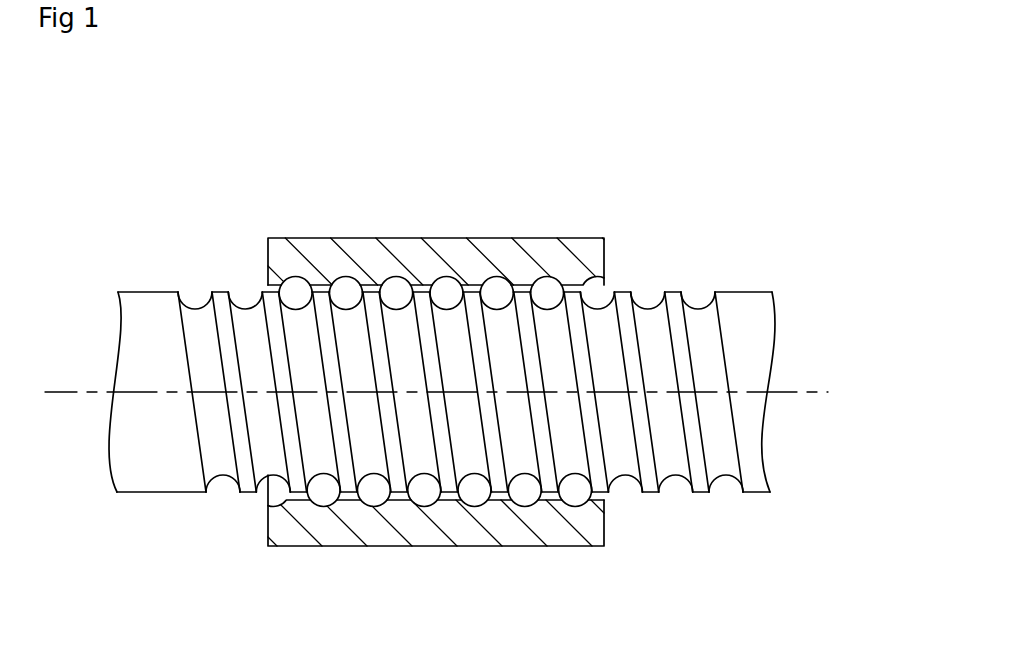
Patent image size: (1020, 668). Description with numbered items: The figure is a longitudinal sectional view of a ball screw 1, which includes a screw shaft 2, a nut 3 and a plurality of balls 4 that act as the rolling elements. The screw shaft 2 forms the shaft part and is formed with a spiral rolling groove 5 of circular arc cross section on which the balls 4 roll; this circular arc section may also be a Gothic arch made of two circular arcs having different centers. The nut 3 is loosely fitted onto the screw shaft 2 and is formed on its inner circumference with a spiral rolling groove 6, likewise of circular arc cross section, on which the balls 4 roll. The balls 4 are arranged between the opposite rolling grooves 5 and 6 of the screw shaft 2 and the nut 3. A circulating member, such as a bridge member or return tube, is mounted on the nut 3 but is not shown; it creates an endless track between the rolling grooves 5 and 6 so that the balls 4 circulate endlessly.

The ball screw 1 is at (638, 178).
The screw shaft 2 is at (675, 292).
The nut 3 is at (393, 238).
The balls 4 is at (380, 500).
The rolling groove 5 is at (675, 476).
The rolling groove 6 is at (552, 302).